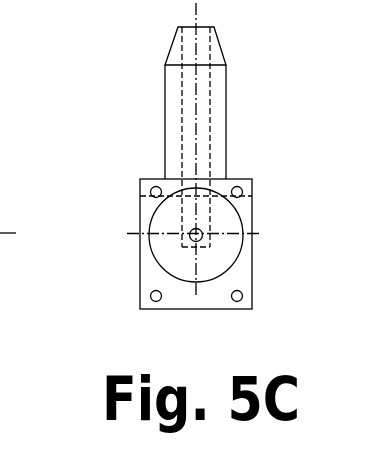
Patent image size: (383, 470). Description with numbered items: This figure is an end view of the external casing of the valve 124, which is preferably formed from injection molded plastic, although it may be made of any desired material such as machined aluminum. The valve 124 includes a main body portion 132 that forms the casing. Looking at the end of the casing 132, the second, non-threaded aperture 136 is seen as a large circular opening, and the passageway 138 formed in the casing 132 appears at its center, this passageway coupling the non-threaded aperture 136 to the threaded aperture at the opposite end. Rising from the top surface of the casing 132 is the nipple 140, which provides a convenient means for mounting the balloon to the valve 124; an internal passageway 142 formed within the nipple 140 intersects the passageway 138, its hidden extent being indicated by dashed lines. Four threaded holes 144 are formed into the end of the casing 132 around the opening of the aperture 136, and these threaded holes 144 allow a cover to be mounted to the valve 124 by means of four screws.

The valve 124 is at (263, 138).
The main body portion 132 is at (253, 208).
The second, non-threaded aperture 136 is at (239, 253).
The passageway 138 is at (189, 232).
The nipple 140 is at (227, 85).
The internal passageway 142 is at (188, 90).
The threaded holes 144 is at (148, 188).